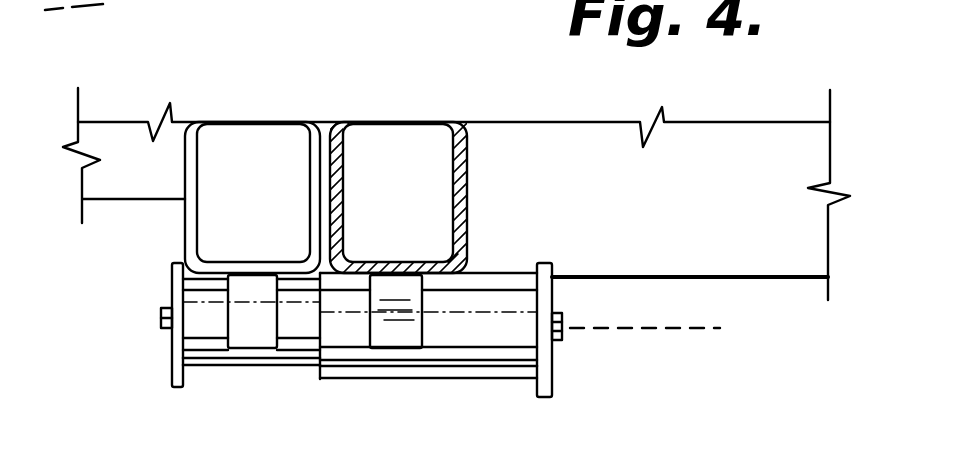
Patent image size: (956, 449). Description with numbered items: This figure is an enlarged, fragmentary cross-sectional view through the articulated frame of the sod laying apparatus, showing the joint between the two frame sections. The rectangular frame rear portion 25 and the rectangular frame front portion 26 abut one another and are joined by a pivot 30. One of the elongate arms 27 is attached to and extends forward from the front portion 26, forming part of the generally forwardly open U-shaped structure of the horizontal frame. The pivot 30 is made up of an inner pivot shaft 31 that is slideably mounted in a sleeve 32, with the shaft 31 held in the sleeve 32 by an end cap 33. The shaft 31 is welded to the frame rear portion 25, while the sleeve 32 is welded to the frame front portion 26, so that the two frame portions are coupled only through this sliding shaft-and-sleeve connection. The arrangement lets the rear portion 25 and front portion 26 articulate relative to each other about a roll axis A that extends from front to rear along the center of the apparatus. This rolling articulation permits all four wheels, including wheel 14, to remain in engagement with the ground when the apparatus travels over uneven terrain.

The wheel 14 is at (241, 7).
The frame rear portion 25 is at (500, 122).
The frame front portion 26 is at (128, 203).
The elongate arm 27 is at (680, 122).
The pivot 30 is at (138, 290).
The inner pivot shaft 31 is at (228, 372).
The sleeve 32 is at (427, 383).
The end cap 33 is at (553, 363).
The roll axis A is at (722, 330).